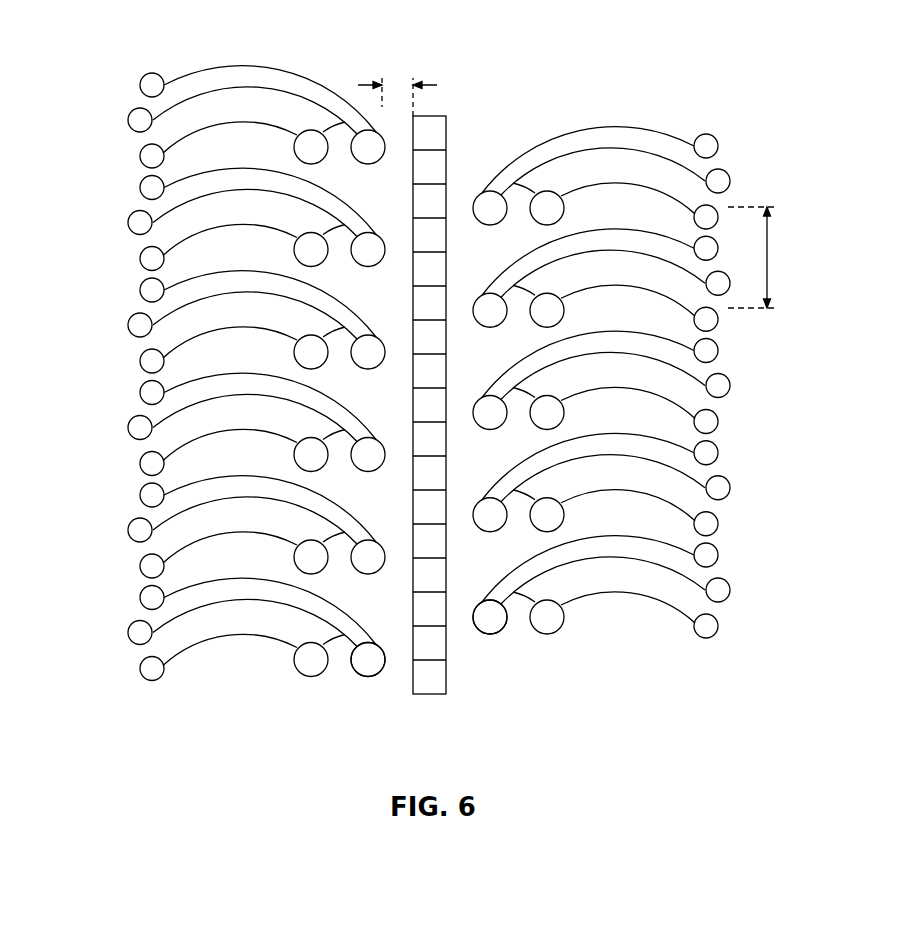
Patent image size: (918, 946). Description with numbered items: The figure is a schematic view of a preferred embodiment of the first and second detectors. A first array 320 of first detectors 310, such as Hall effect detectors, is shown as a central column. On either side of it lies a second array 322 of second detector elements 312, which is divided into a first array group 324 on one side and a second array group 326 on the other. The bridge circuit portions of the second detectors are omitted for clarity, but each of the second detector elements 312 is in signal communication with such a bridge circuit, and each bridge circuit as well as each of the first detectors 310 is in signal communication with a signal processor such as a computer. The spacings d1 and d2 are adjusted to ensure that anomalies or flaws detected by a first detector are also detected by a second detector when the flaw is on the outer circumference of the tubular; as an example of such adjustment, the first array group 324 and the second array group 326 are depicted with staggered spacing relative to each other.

The first detector 310 is at (436, 133).
The second detector element 312 is at (333, 693).
The first array 320 is at (467, 45).
The second array 322 is at (362, 680).
The first array group 324 is at (213, 410).
The second array group 326 is at (735, 413).
The spacing d1 is at (377, 86).
The spacing d2 is at (768, 258).